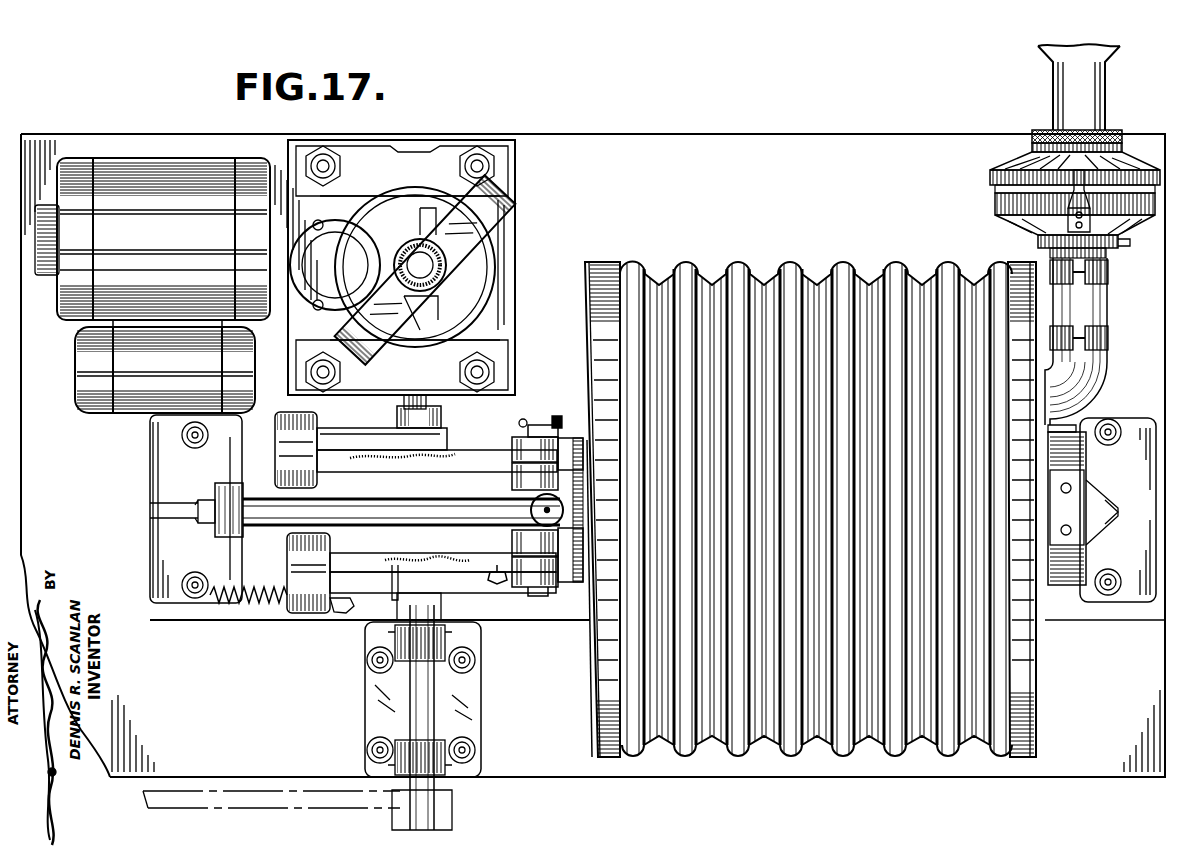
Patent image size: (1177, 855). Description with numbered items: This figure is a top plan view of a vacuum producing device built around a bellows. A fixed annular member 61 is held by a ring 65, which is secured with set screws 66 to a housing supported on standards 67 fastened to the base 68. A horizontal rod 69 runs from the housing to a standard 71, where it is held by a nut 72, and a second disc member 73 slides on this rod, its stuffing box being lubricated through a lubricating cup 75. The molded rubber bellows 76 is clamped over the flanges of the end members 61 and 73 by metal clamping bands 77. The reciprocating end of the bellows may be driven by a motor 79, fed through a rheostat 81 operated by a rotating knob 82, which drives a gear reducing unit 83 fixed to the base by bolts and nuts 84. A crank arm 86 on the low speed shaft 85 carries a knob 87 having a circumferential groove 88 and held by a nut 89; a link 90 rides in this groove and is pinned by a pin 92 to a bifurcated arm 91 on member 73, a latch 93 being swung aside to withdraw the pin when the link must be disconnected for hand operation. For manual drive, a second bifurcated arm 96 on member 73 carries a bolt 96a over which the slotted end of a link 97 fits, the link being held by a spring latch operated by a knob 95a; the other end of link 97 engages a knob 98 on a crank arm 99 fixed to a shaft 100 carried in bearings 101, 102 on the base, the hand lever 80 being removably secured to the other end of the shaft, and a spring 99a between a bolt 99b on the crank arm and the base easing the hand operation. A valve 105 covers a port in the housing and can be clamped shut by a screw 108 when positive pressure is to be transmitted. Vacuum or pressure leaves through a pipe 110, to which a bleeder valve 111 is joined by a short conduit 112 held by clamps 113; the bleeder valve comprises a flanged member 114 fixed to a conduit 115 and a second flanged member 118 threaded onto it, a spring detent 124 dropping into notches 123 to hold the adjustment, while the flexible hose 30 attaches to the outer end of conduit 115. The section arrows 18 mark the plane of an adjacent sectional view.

The section line 18 is at (1084, 658).
The flexible hose 30 is at (1040, 54).
The fixed annular member 61 is at (1038, 668).
The ring 65 is at (1066, 587).
The set screws 66 is at (1080, 420).
The standards 67 is at (1136, 592).
The base 68 is at (700, 148).
The horizontal rod 69 is at (432, 515).
The standard 71 is at (168, 528).
The nut 72 is at (212, 530).
The second disc member 73 is at (584, 440).
The lubricating cup 75 is at (530, 509).
The molded rubber bellows 76 is at (782, 270).
The metal clamping bands 77 is at (603, 262).
The motor 79 is at (161, 178).
The hand lever 80 is at (240, 806).
The rheostat 81 is at (496, 252).
The rotating knob 82 is at (398, 270).
The gear reducing unit 83 is at (512, 212).
The bolts and nuts 84 is at (468, 164).
The low speed shaft 85 is at (426, 400).
The crank arm 86 is at (380, 440).
The knob 87 is at (282, 452).
The circumferential groove 88 is at (282, 460).
The nut 89 is at (317, 416).
The link 90 is at (395, 470).
The bifurcated arm 91 is at (528, 476).
The pin 92 is at (548, 420).
The latch 93 is at (519, 422).
The knob 95a is at (498, 585).
The second bifurcated arm 96 is at (524, 552).
The bolt 96a is at (537, 596).
The link 97 is at (438, 564).
The knob 98 is at (330, 542).
The crank arm 99 is at (378, 588).
The spring 99a is at (258, 604).
The bolt 99b is at (348, 614).
The shaft 100 is at (447, 646).
The bearing 101 is at (420, 643).
The bearing 102 is at (420, 757).
The valve 105 is at (1086, 468).
The screw 108 is at (1114, 508).
The pipe 110 is at (1108, 372).
The bleeder valve 111 is at (994, 204).
The short conduit 112 is at (1093, 296).
The clamps 113 is at (1108, 338).
The flanged member 114 is at (1002, 222).
The conduit 115 is at (1110, 142).
The second flanged member 118 is at (1025, 165).
The notches 123 is at (990, 176).
The spring detent 124 is at (1134, 149).